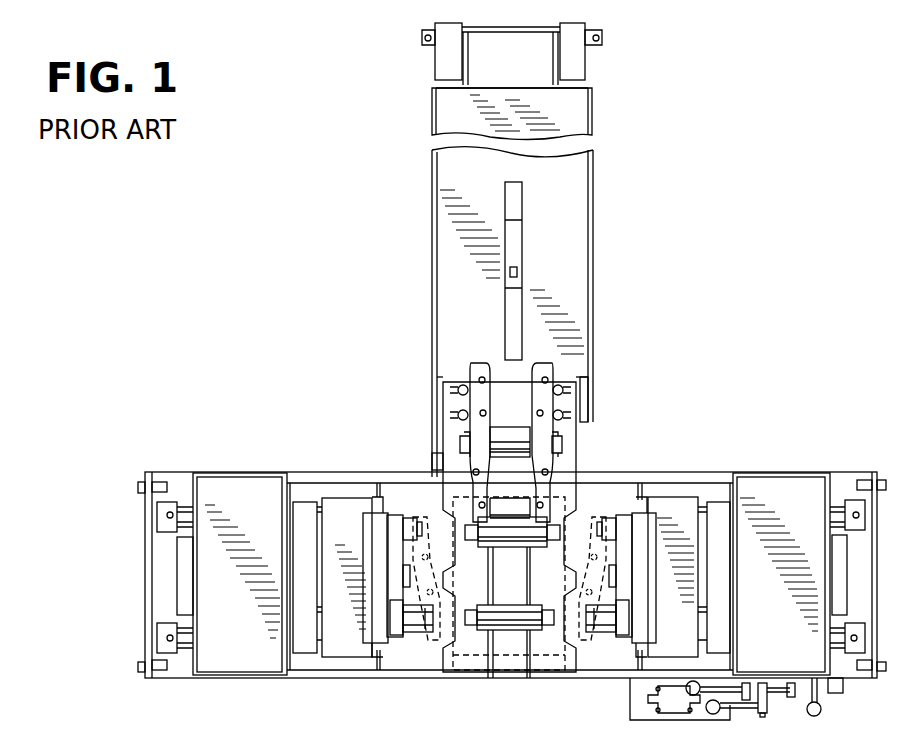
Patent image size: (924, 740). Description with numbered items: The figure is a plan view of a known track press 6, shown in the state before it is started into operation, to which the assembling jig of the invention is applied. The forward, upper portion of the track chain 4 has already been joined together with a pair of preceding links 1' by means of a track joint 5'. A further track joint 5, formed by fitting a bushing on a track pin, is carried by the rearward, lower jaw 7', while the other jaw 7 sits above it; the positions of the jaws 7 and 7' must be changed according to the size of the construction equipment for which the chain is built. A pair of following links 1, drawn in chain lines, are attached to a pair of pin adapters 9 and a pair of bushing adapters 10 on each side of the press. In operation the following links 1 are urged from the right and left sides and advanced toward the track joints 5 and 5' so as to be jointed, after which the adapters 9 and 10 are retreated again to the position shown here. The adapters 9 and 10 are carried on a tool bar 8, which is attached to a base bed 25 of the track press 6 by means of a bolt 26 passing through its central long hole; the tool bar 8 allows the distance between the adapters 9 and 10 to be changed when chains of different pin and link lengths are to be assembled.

The following links 1 is at (509, 619).
The preceding links 1' is at (506, 442).
The track chain 4 is at (563, 455).
The track joint 5 is at (509, 659).
The track joint 5' is at (512, 503).
The track press 6 is at (404, 399).
The jaw 7 is at (509, 671).
The rearward jaw 7' is at (495, 576).
The tool bar 8 is at (397, 627).
The pin adapters 9 is at (410, 523).
The bushing adapters 10 is at (413, 622).
The base bed 25 is at (365, 513).
The bolt 26 is at (403, 573).